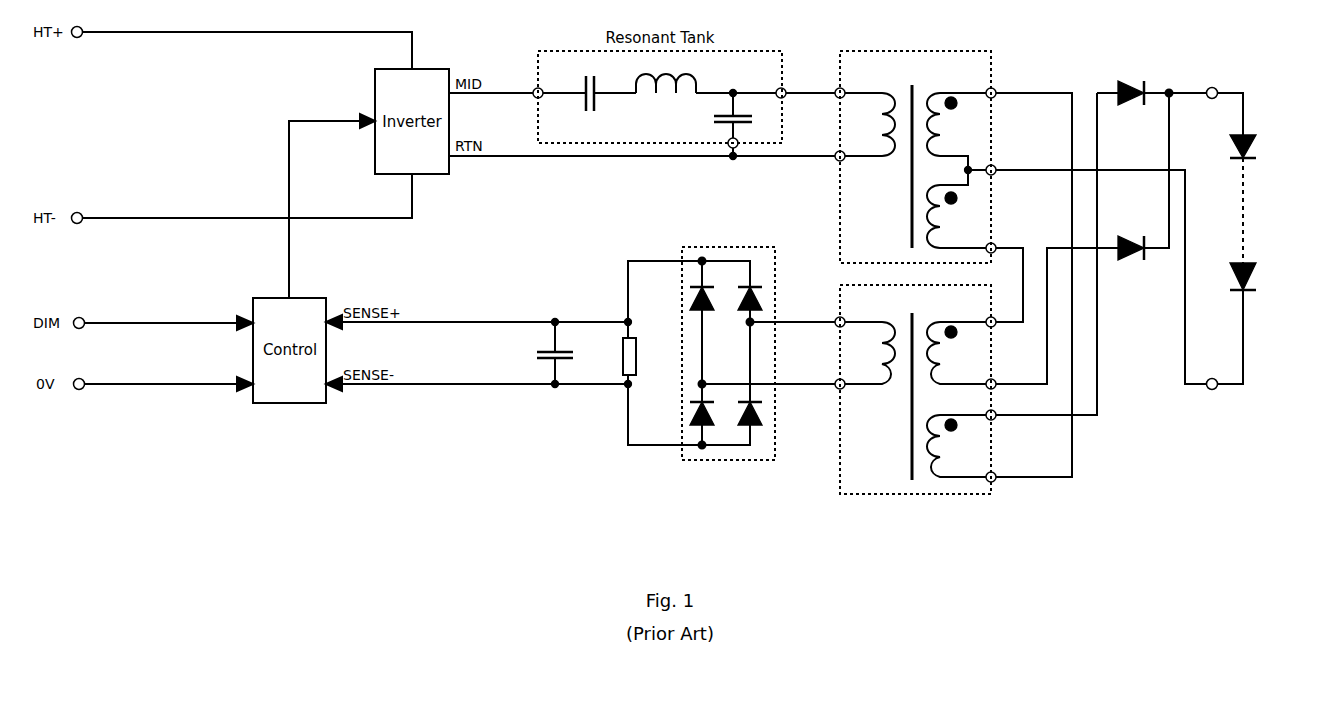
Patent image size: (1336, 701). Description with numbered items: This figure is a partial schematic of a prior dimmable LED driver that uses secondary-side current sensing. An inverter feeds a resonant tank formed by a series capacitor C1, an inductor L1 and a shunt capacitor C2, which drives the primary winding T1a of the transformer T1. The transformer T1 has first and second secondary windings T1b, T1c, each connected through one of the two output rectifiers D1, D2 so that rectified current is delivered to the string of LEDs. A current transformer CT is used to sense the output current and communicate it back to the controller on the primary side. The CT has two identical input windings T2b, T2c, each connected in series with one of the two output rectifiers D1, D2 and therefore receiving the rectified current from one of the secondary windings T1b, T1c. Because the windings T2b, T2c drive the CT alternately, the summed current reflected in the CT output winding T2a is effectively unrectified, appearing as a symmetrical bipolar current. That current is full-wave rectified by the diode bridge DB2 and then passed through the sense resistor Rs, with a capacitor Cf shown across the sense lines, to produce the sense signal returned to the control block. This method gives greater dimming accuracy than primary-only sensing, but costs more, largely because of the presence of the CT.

The resonant tank series capacitor C1 is at (592, 106).
The resonant tank inductor L1 is at (666, 101).
The resonant tank parallel capacitor C2 is at (745, 125).
The transformer T1 is at (915, 145).
The transformer primary winding T1a is at (870, 124).
The first secondary winding T1b is at (956, 133).
The second secondary winding T1c is at (956, 209).
The current transformer CT is at (915, 389).
The output winding T2a is at (870, 353).
The input winding T2b is at (956, 353).
The input winding T2c is at (956, 446).
The output rectifier D1 is at (1131, 82).
The output rectifier D2 is at (1131, 263).
The diode bridge DB2 is at (731, 344).
The filter capacitor Cf is at (544, 353).
The sense resistor Rs is at (617, 353).
The LED string load LEDs is at (1271, 212).